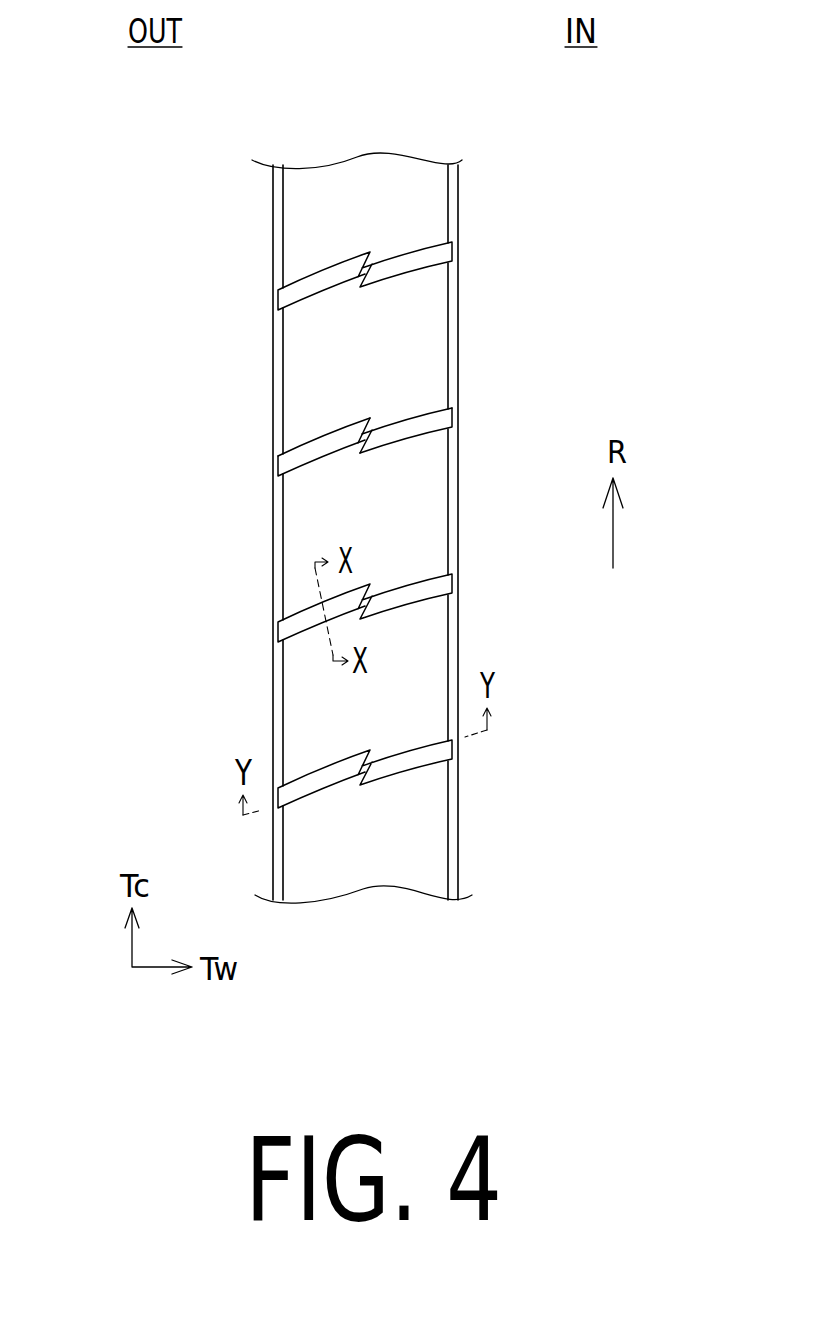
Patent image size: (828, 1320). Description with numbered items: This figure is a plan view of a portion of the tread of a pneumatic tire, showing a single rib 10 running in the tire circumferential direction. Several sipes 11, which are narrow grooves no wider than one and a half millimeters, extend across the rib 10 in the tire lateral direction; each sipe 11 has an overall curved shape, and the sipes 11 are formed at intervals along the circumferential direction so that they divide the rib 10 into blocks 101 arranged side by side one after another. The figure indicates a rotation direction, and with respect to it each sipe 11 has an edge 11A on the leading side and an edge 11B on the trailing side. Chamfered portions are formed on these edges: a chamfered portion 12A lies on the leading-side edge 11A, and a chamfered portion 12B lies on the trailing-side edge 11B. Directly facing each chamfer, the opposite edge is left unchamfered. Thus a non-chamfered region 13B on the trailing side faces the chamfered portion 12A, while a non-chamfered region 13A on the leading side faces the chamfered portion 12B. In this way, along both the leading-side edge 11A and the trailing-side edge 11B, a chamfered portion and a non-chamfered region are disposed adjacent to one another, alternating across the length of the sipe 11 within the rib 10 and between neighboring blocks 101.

The rib 10 is at (462, 130).
The sipe 11 is at (307, 458).
The edge on the leading side 11A is at (352, 442).
The edge on the trailing side 11B is at (380, 428).
The chamfered portion on the leading side 12A is at (330, 428).
The chamfered portion on the trailing side 12B is at (407, 430).
The non-chamfered region on the leading side 13A is at (407, 412).
The non-chamfered region on the trailing side 13B is at (327, 463).
The block 101 is at (327, 697).